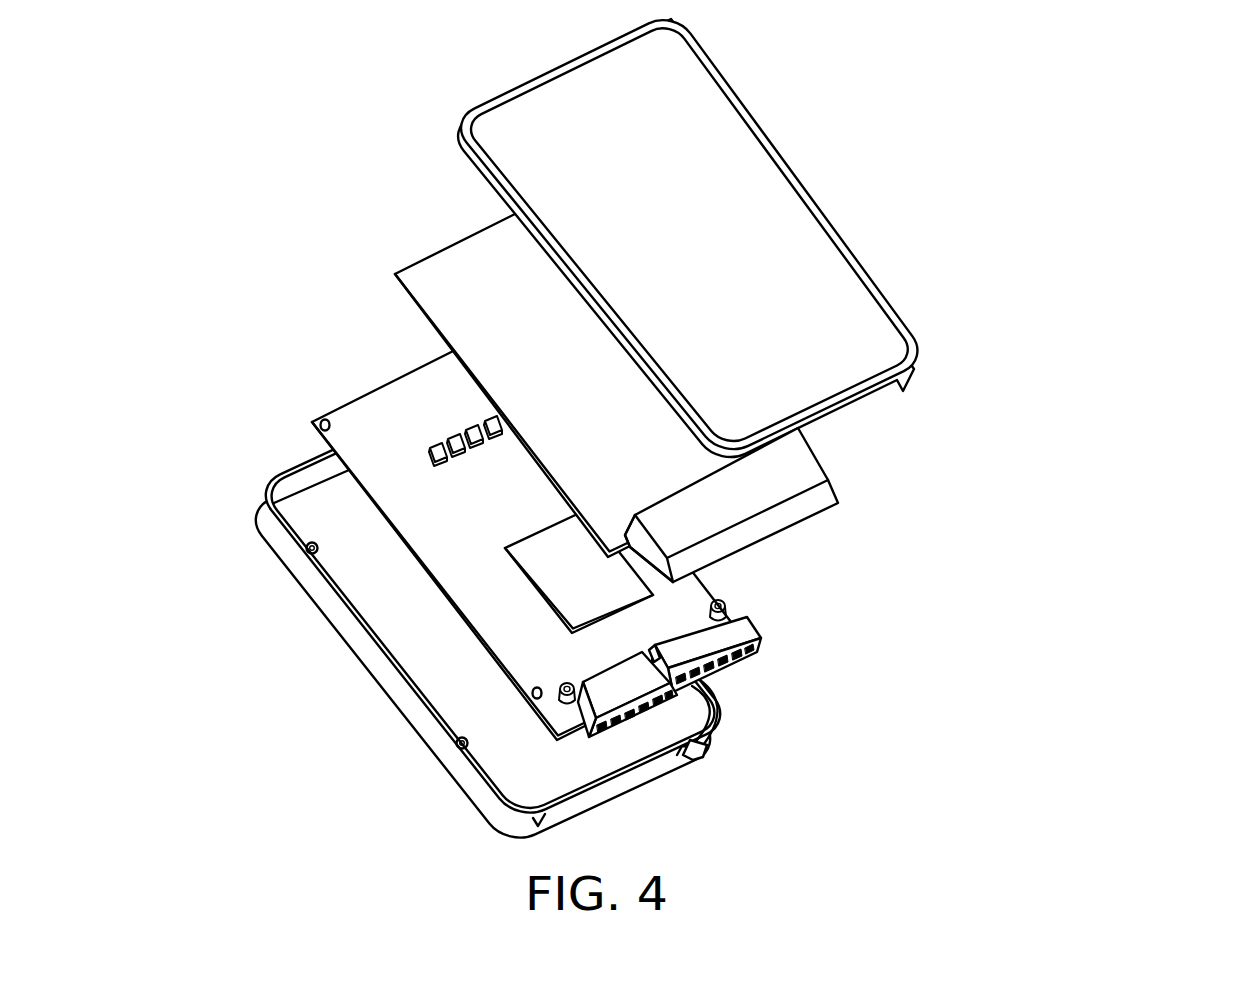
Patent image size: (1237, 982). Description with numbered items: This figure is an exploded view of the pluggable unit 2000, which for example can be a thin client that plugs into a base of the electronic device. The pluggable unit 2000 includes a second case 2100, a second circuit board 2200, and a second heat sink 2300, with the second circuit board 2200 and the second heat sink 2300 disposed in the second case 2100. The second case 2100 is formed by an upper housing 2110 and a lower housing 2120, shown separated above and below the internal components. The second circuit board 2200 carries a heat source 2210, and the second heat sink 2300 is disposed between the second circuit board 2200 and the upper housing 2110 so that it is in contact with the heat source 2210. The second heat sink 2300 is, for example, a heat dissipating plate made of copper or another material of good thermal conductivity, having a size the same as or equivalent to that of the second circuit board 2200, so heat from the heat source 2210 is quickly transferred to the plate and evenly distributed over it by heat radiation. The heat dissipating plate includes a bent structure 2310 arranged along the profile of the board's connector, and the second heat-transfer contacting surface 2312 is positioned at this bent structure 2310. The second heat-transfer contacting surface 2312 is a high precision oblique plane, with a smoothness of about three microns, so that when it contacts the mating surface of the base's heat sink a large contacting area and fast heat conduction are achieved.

The pluggable unit 2000 is at (1066, 830).
The second case 2100 is at (1110, 298).
The upper housing 2110 is at (865, 340).
The lower housing 2120 is at (707, 747).
The second circuit board 2200 is at (373, 422).
The heat source 2210 is at (630, 690).
The second heat sink 2300 is at (453, 301).
The bent structure 2310 is at (861, 499).
The second heat-transfer contacting surface 2312 is at (762, 527).